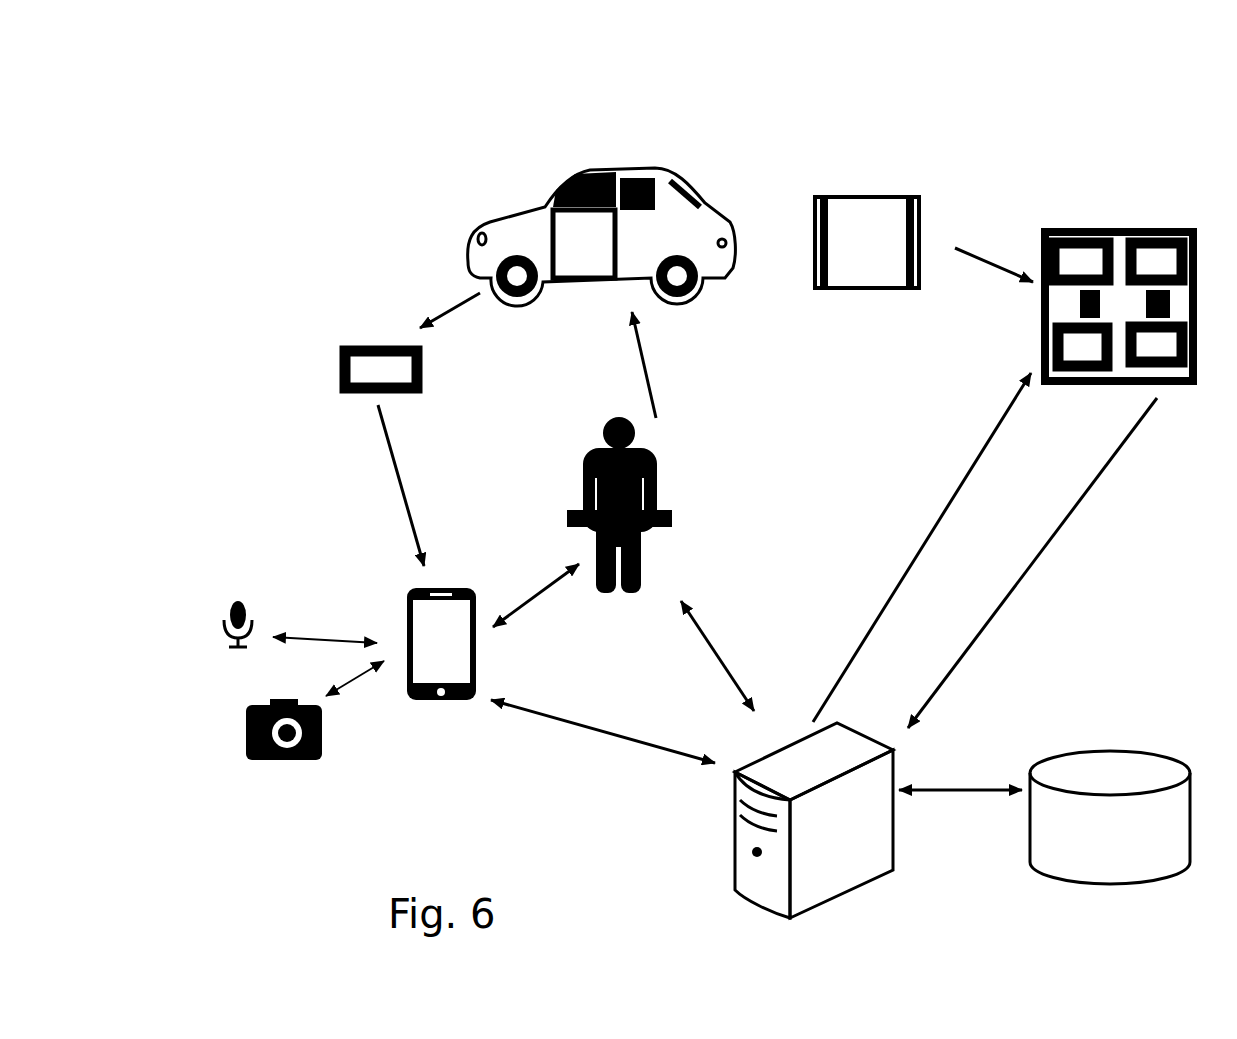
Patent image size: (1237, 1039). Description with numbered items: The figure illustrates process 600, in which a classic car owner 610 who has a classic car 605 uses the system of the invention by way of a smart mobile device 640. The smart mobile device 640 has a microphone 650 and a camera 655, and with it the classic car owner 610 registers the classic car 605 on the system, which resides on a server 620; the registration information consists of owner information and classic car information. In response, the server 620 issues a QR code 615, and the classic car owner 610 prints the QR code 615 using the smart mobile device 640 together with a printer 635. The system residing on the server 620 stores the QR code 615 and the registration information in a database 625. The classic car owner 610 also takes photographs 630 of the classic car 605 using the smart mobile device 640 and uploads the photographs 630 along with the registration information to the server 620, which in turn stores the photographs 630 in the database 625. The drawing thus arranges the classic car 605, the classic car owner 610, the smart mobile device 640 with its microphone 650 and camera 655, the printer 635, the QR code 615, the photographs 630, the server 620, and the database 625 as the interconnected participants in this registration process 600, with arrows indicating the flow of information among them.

The process 600 is at (715, 406).
The classic car 605 is at (501, 204).
The classic car owner 610 is at (581, 446).
The QR code 615 is at (1134, 195).
The server 620 is at (707, 801).
The database 625 is at (1129, 803).
The photographs 630 is at (322, 363).
The printer 635 is at (889, 169).
The smart mobile device 640 is at (431, 713).
The microphone 650 is at (211, 589).
The camera 655 is at (291, 771).